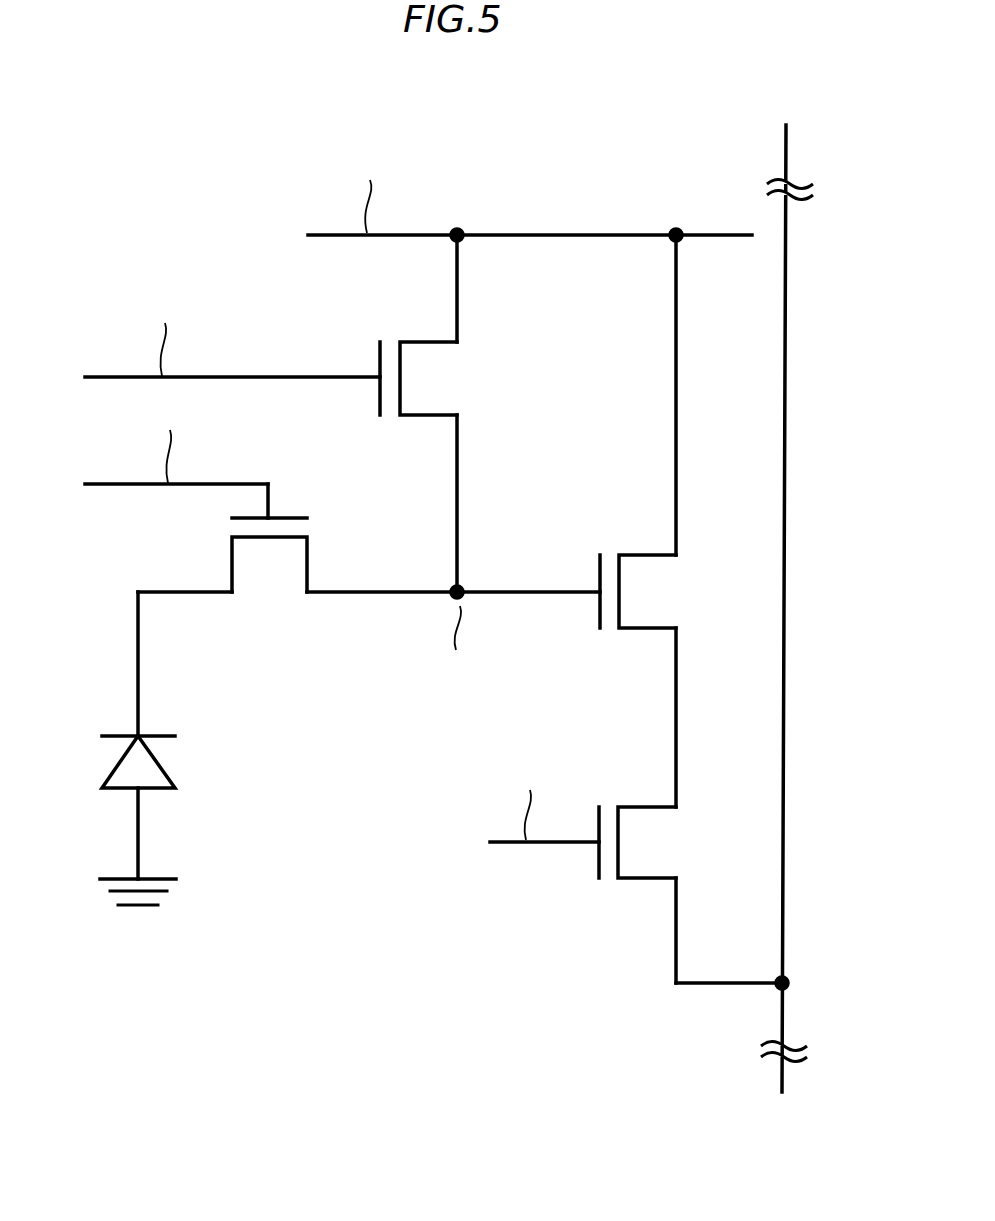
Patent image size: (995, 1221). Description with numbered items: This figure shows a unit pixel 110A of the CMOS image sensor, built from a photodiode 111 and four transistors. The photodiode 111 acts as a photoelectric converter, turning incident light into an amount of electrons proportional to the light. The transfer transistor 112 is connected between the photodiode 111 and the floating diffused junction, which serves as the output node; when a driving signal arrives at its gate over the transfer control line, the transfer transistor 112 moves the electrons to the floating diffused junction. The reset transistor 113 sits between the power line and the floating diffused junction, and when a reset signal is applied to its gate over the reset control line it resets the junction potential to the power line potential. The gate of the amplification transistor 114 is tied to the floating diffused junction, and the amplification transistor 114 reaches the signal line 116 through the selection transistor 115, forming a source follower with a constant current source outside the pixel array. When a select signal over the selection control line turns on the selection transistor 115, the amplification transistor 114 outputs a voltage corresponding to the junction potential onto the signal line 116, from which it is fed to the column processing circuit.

The unit pixel 110A is at (296, 90).
The photodiode 111 is at (120, 757).
The transfer transistor 112 is at (277, 575).
The reset transistor 113 is at (437, 372).
The amplification transistor 114 is at (635, 600).
The selection transistor 115 is at (635, 849).
The signal line 116 is at (784, 725).